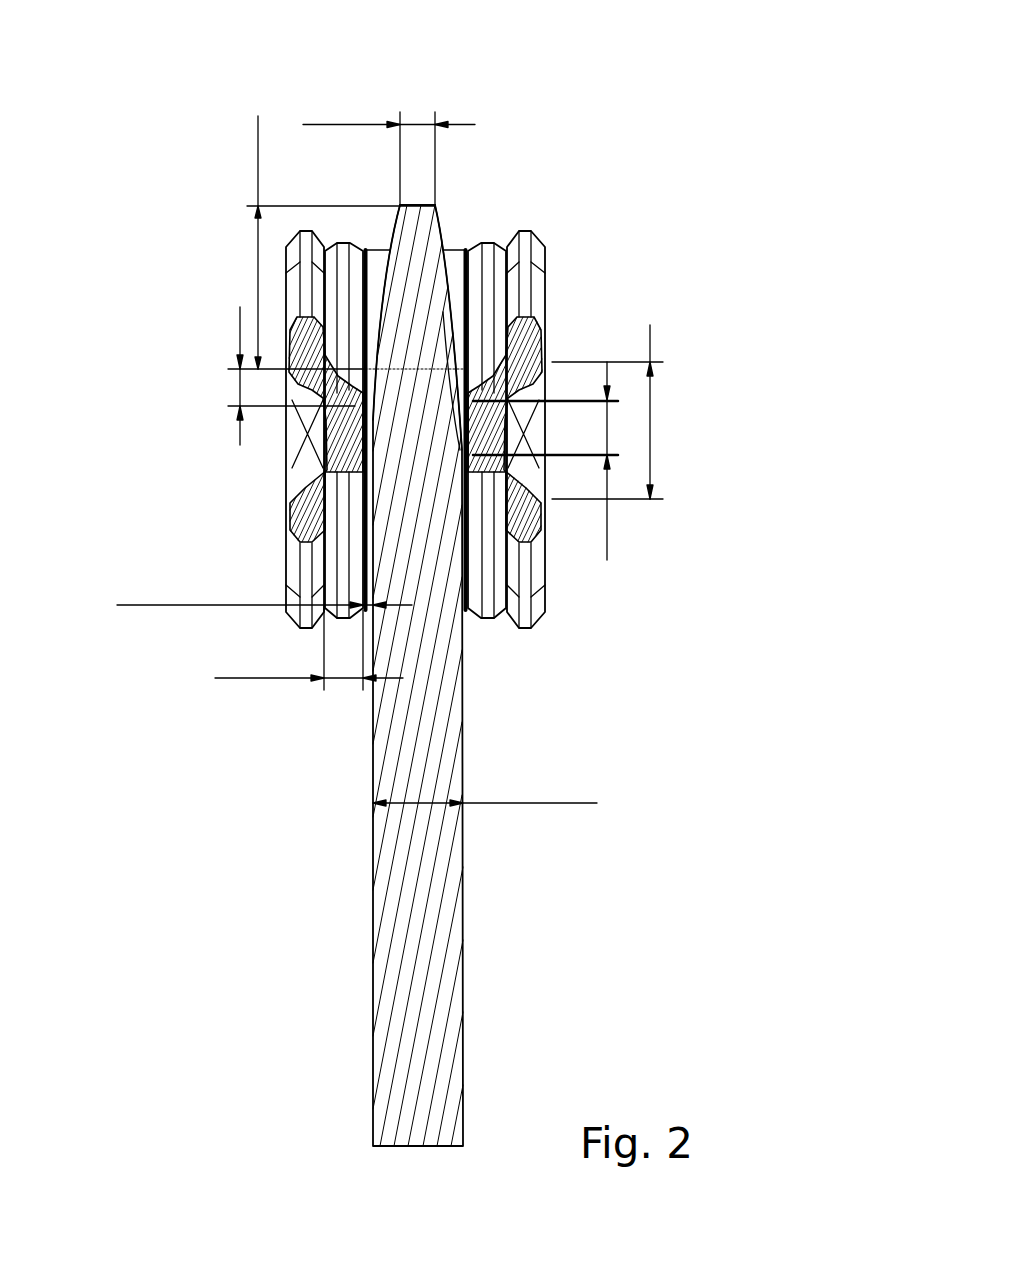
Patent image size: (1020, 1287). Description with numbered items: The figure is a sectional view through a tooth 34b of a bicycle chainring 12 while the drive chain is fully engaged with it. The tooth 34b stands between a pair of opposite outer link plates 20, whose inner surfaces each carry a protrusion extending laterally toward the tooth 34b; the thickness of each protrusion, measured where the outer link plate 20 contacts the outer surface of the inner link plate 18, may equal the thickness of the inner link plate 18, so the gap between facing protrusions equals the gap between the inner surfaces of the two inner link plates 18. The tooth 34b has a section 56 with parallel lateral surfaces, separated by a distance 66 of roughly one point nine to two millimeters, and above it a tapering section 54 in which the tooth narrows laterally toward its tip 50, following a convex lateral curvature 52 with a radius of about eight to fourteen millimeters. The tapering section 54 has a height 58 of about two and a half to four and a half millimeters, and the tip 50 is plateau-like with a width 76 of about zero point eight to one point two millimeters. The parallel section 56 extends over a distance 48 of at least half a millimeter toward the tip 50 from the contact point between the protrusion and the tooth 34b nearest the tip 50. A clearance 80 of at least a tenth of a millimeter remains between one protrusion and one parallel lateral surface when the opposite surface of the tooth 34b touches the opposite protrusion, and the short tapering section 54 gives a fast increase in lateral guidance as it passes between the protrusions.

The chainring 12 is at (465, 733).
The inner link plate 18 is at (336, 243).
The outer link plate 20 is at (288, 246).
The tooth 34b is at (410, 283).
The distance 48 is at (240, 323).
The tip 50 is at (418, 203).
The lateral curvature 52 is at (437, 198).
The tapering section 54 is at (443, 312).
The section with parallel lateral surfaces 56 is at (437, 465).
The height 58 is at (258, 153).
The distance 66 is at (540, 803).
The width 76 is at (347, 125).
The clearance 80 is at (172, 605).